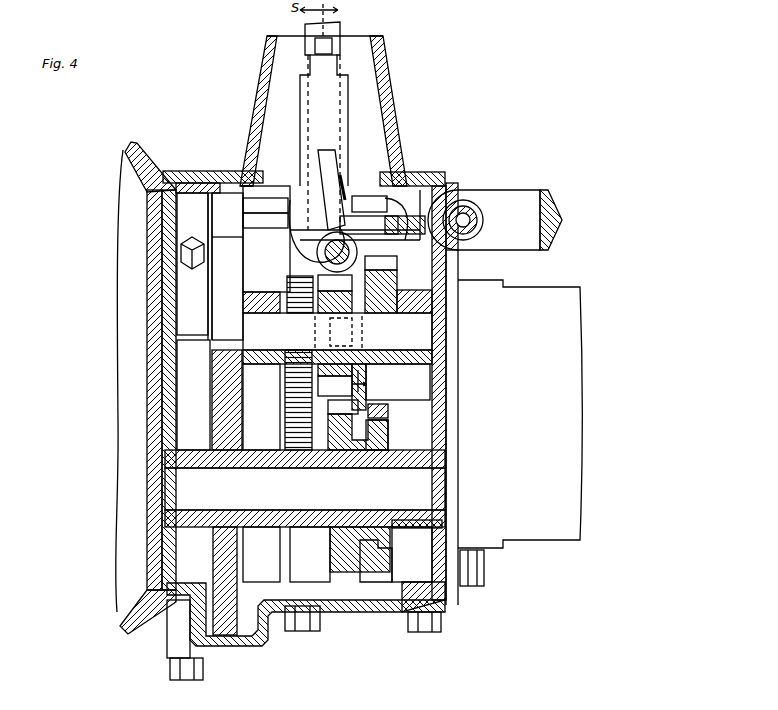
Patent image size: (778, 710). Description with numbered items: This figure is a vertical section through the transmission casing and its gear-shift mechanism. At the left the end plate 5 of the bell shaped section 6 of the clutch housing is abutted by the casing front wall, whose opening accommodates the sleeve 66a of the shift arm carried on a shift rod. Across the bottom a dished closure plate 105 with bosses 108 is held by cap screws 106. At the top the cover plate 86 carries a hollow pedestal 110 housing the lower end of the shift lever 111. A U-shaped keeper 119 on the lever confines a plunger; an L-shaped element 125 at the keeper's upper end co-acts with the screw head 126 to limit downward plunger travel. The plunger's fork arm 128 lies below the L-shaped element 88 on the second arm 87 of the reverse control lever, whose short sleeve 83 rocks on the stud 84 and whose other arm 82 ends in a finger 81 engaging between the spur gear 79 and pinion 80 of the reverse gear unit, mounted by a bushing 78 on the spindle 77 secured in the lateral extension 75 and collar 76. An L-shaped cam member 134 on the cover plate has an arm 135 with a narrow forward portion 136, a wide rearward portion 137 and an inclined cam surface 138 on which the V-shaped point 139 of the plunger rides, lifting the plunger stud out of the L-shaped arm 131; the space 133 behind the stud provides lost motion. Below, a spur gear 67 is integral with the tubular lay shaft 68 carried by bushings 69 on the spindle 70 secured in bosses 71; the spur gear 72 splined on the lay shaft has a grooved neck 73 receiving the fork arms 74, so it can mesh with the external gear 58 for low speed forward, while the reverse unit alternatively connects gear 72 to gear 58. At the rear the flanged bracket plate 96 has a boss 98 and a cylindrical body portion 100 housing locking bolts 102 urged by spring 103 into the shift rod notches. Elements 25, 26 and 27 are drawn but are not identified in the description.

The end plate 5 is at (160, 203).
The bell shaped section 6 is at (138, 152).
The sleeve 66a is at (194, 200).
The hollow pedestal 110 is at (380, 92).
The shift lever 111 is at (338, 28).
The head of screw 126 is at (332, 46).
The L-shaped element 125 is at (326, 72).
The keeper 119 is at (342, 126).
The second arm 87 is at (300, 182).
The narrow forward portion 136 is at (285, 205).
The forwardly projecting arm 135 is at (285, 220).
The L-shaped element 88 is at (330, 152).
The fork arm 128 is at (342, 178).
The wide rearward portion 137 is at (316, 231).
The cam surface 138 is at (369, 195).
The V-shaped element 139 is at (355, 215).
The space 133 is at (382, 225).
The short sleeve 83 is at (347, 252).
The L-shaped arm 131 is at (360, 221).
The stud 84 is at (318, 278).
The arm 82 is at (380, 287).
The external gear 58 is at (261, 293).
The pinion 80 is at (300, 348).
The spindle 77 is at (422, 338).
The bushing 78 is at (333, 332).
The finger 81 is at (373, 332).
The lateral extension 75 is at (261, 407).
The collar 76 is at (367, 379).
The spur gear 79 is at (391, 387).
The fork arms 74 is at (388, 424).
The bushings 69 is at (338, 508).
The spindle 70 is at (423, 490).
The spur gear 67 is at (238, 590).
The tubular lay shaft 68 is at (261, 554).
The spur gear 72 is at (330, 568).
The grooved neck 73 is at (386, 556).
The bosses 71 is at (414, 527).
The closure plate 105 is at (262, 648).
The bosses 108 is at (168, 650).
The cap screws 106 is at (434, 632).
The cam member 134 is at (402, 173).
The cover plate 86 is at (440, 182).
The flanged bracket plate 96 is at (458, 190).
The body portion 100 is at (486, 230).
The boss 98 is at (532, 192).
The spring 103 is at (480, 216).
The locking bolts 102 is at (470, 204).
The plate 26 is at (457, 458).
The box 25 is at (548, 518).
The bolt 27 is at (476, 583).